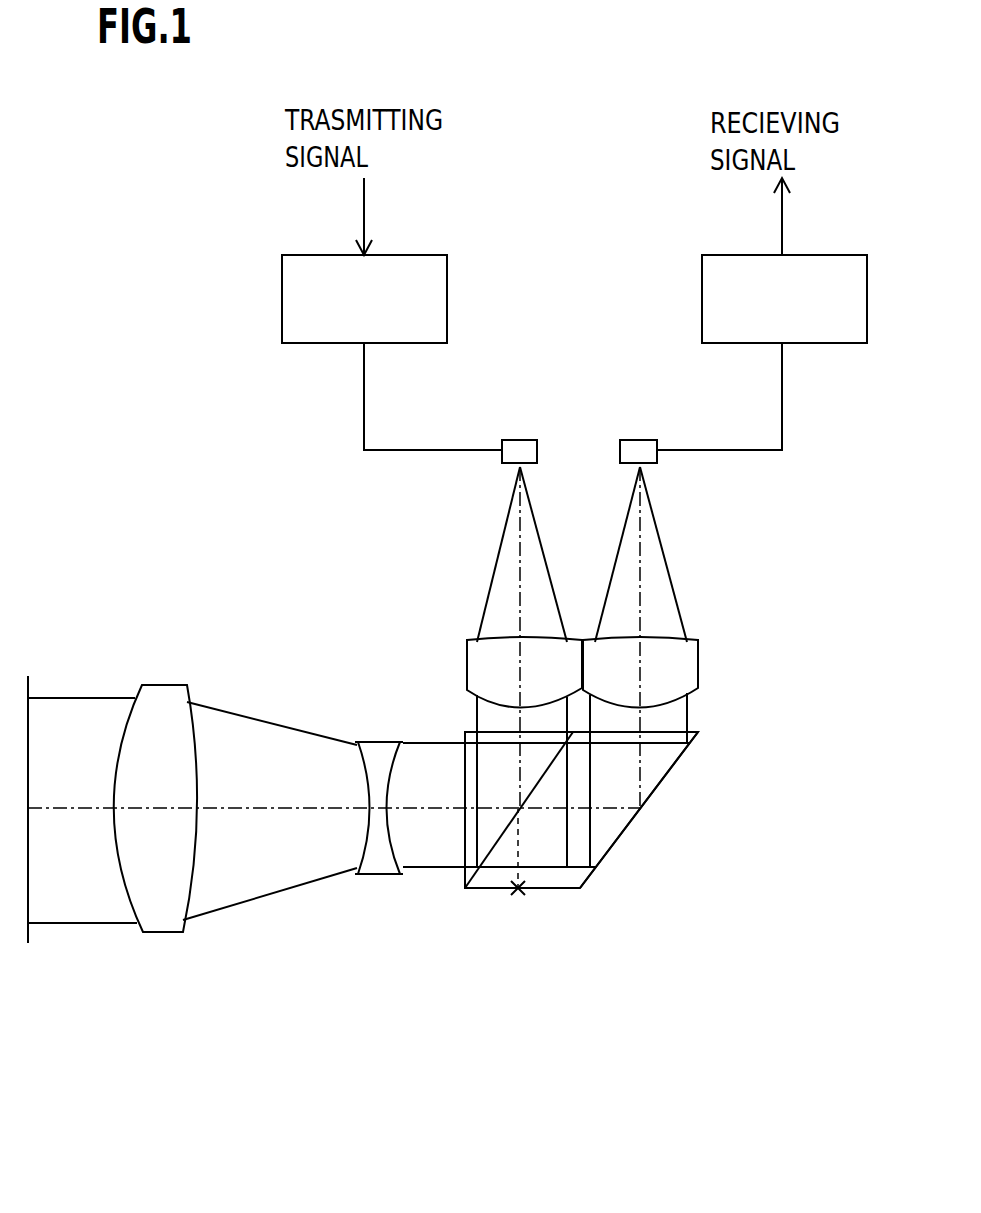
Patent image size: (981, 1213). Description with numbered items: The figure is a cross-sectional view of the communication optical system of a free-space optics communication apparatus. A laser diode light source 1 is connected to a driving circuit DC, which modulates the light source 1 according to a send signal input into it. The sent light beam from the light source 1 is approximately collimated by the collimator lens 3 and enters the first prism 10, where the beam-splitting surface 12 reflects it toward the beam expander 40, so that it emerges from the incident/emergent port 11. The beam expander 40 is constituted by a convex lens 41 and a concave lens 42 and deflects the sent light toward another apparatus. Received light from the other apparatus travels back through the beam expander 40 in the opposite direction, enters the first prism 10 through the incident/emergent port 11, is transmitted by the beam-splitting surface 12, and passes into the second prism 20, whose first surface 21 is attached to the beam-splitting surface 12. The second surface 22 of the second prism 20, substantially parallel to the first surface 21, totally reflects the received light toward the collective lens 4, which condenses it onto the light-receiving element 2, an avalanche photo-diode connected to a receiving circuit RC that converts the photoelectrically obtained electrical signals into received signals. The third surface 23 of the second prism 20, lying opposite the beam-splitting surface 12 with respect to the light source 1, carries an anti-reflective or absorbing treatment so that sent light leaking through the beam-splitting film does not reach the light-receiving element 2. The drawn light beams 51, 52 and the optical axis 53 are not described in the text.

The laser diode light source 1 is at (502, 443).
The light-receiving element 2 is at (657, 445).
The collimator lens 3 is at (467, 658).
The collective lens 4 is at (698, 658).
The first prism 10 is at (488, 763).
The incident/emergent port 11 is at (465, 758).
The beam-splitting surface 12 is at (475, 843).
The second prism 20 is at (535, 816).
The first surface 21 is at (475, 843).
The second surface 22 is at (617, 842).
The third surface 23 is at (555, 890).
The beam expander 40 is at (258, 869).
The convex lens 41 is at (163, 933).
The concave lens 42 is at (375, 868).
The transmitting light beam 51 is at (518, 545).
The receiving light beam 52 is at (640, 545).
The optical axis 53 is at (265, 807).
The driving circuit DC is at (430, 258).
The receiving circuit RC is at (813, 260).